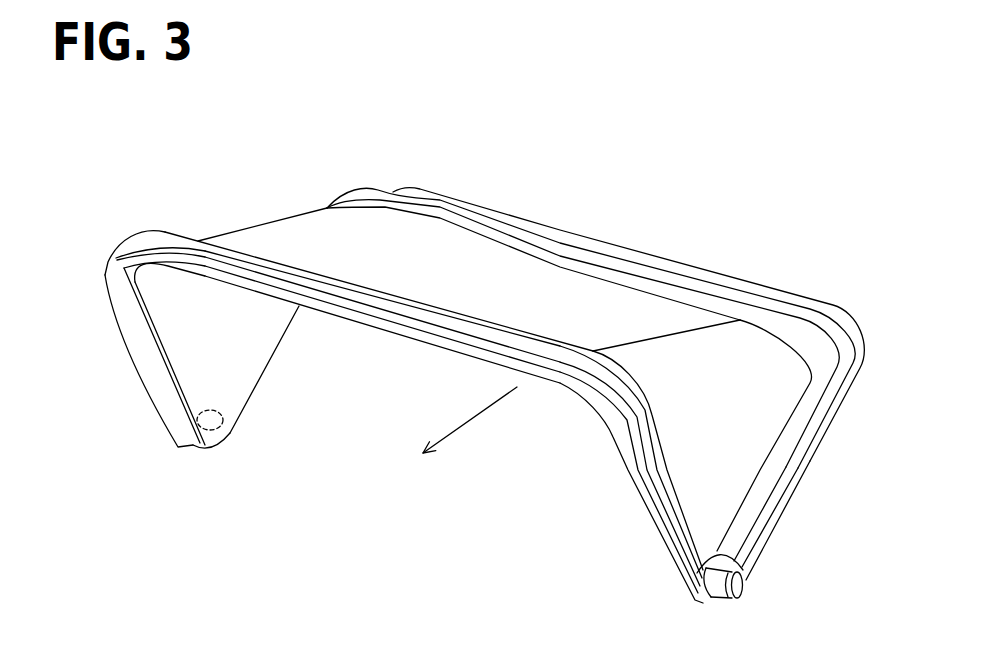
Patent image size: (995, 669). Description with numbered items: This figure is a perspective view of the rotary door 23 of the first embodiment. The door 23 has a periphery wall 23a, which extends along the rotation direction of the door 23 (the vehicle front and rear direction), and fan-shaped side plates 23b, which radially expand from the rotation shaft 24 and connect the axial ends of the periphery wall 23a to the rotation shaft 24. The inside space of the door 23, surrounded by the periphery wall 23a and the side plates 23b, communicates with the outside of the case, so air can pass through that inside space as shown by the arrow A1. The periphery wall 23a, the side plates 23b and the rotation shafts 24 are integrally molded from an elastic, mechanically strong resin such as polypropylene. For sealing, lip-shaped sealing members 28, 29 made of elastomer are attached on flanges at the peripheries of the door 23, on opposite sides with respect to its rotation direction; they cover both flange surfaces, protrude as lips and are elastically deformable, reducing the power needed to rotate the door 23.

The rotary door 23 is at (614, 220).
The periphery wall 23a is at (382, 260).
The side plates 23b is at (220, 357).
The rotation shaft 24 is at (222, 430).
The sealing member 28 is at (143, 228).
The sealing member 29 is at (685, 268).
The arrow A1 is at (477, 418).